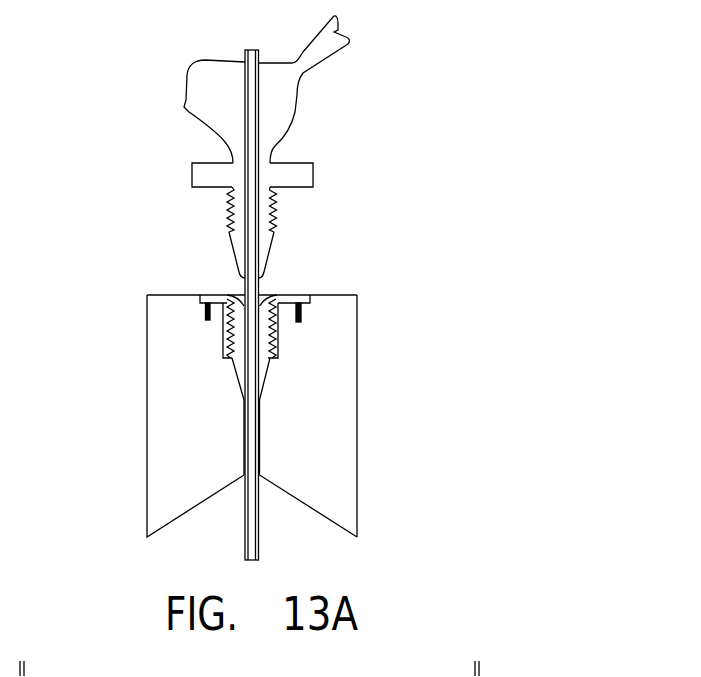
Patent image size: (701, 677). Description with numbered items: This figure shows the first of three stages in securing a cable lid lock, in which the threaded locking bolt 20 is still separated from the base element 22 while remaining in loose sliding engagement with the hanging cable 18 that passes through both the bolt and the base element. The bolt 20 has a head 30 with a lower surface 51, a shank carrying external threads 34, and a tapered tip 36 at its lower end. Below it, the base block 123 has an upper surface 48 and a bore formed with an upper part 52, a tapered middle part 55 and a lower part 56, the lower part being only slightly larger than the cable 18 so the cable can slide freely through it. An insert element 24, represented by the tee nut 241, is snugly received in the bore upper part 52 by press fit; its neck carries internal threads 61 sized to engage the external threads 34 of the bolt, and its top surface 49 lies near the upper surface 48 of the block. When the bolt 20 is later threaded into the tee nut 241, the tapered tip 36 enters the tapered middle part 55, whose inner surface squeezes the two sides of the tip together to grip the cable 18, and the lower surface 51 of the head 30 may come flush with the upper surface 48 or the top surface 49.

The locking bolt 20 is at (327, 191).
The head 30 is at (298, 163).
The lower surface 51 is at (202, 193).
The external threads 34 is at (227, 207).
The tapered tip 36 is at (273, 257).
The hanging cable 18 is at (268, 287).
The internal threads 61 is at (238, 291).
The base element 22 is at (96, 300).
The upper surface 48 is at (170, 294).
The top surface 49 is at (298, 295).
The insert element 24 is at (326, 304).
The tee nut 241 is at (200, 303).
The upper part 52 is at (280, 340).
The tapered middle part 55 is at (270, 383).
The lower part 56 is at (260, 437).
The base block 123 is at (158, 377).